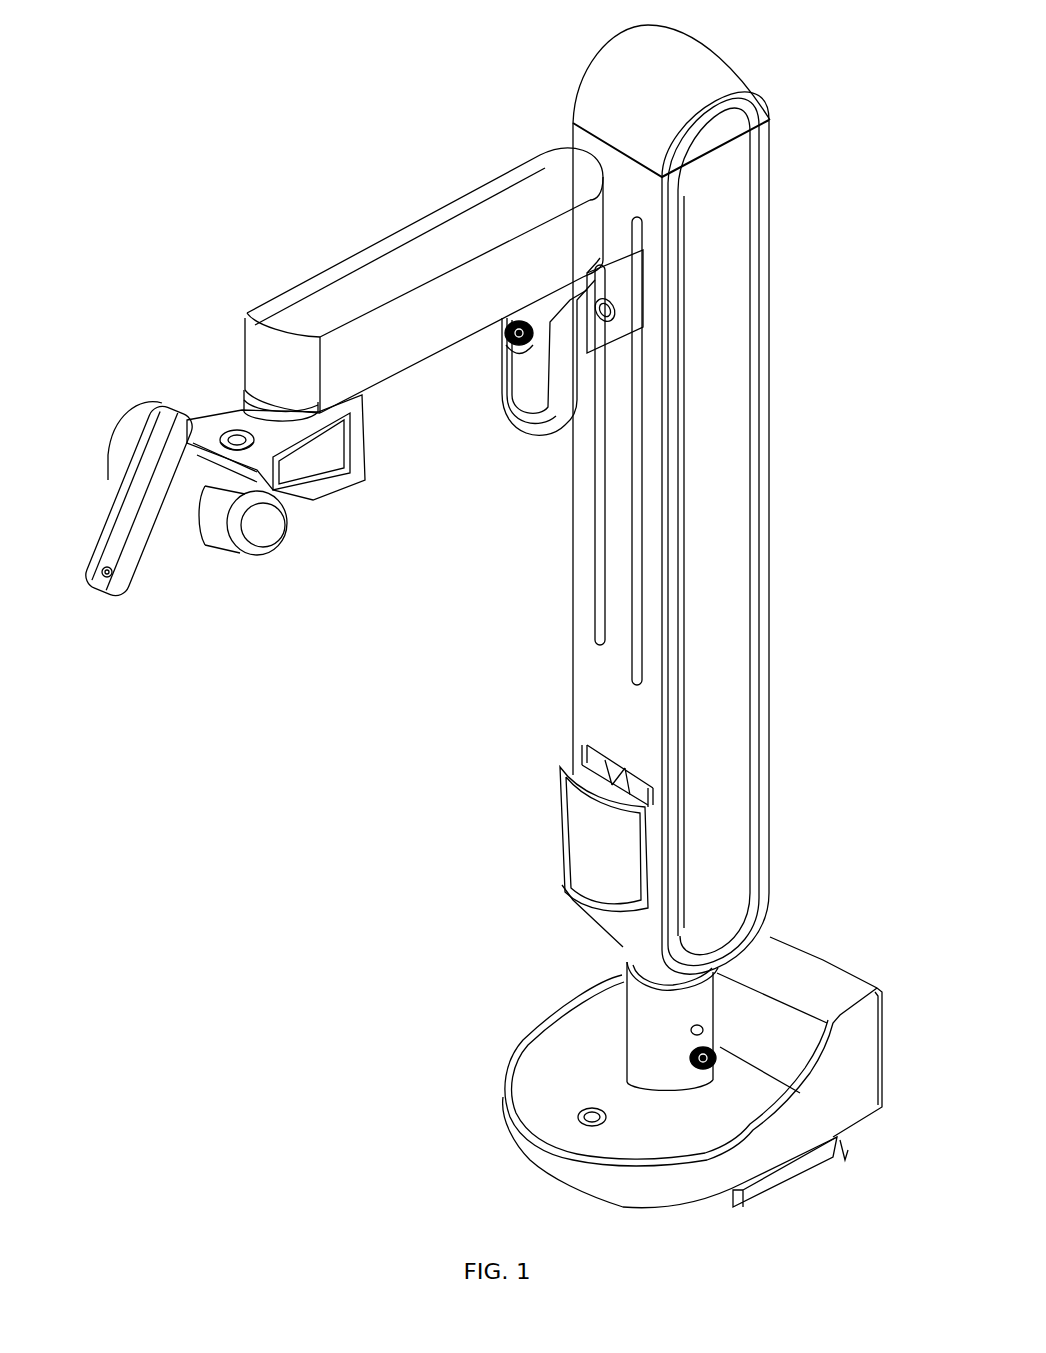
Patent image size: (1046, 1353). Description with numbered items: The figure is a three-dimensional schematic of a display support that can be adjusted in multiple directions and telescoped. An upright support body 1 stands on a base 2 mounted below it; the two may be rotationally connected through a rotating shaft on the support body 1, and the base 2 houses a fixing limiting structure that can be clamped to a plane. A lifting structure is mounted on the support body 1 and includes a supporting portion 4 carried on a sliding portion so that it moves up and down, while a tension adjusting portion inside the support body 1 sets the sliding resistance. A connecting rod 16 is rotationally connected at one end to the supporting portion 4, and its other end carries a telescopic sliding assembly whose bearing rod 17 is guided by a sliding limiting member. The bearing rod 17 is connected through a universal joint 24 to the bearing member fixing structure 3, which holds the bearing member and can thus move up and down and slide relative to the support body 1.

The support body 1 is at (713, 752).
The base 2 is at (790, 960).
The bearing member fixing structure 3 is at (150, 495).
The supporting portion 4 is at (560, 297).
The connecting rod 16 is at (430, 317).
The bearing rod 17 is at (230, 440).
The universal joint 24 is at (105, 577).